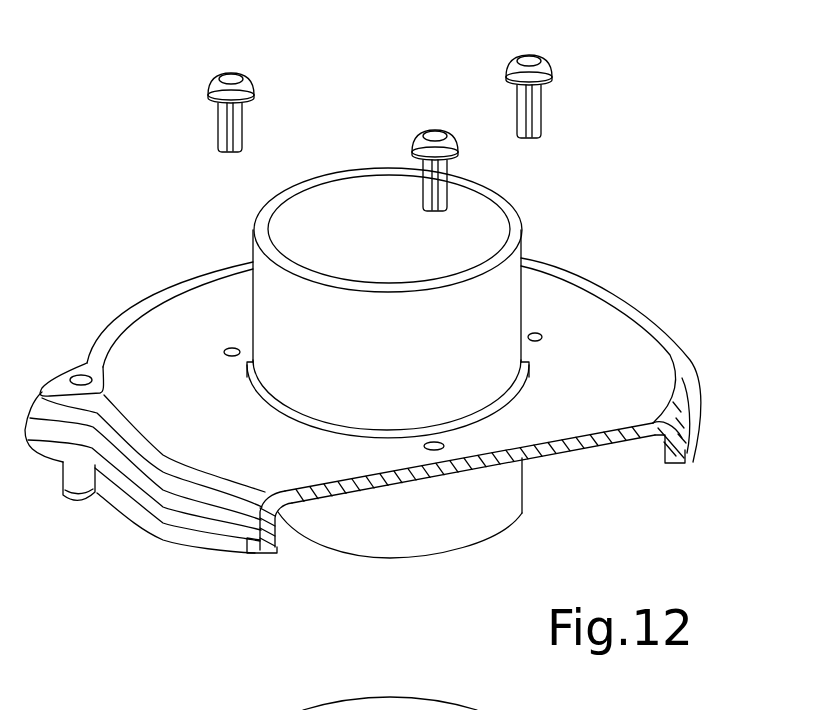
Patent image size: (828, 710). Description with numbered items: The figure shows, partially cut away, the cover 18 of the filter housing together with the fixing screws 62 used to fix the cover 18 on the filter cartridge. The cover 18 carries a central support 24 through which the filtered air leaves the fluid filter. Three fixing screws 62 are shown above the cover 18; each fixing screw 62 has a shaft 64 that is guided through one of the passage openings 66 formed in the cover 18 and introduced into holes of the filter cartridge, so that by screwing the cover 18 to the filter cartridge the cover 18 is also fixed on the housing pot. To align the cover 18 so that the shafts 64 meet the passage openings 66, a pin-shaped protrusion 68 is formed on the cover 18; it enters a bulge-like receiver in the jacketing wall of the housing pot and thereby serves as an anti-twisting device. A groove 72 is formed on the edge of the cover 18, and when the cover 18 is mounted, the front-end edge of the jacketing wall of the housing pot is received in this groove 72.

The cover 18 is at (668, 296).
The support 24 is at (287, 290).
The fixing screws 62 is at (200, 120).
The shaft 64 is at (232, 123).
The passage openings 66 is at (232, 348).
The pin-shaped protrusion 68 is at (73, 483).
The groove 72 is at (263, 573).